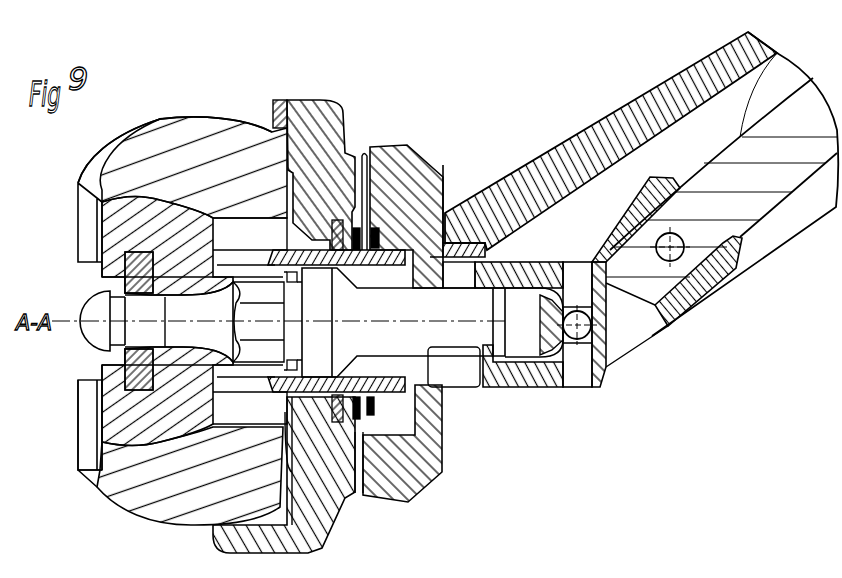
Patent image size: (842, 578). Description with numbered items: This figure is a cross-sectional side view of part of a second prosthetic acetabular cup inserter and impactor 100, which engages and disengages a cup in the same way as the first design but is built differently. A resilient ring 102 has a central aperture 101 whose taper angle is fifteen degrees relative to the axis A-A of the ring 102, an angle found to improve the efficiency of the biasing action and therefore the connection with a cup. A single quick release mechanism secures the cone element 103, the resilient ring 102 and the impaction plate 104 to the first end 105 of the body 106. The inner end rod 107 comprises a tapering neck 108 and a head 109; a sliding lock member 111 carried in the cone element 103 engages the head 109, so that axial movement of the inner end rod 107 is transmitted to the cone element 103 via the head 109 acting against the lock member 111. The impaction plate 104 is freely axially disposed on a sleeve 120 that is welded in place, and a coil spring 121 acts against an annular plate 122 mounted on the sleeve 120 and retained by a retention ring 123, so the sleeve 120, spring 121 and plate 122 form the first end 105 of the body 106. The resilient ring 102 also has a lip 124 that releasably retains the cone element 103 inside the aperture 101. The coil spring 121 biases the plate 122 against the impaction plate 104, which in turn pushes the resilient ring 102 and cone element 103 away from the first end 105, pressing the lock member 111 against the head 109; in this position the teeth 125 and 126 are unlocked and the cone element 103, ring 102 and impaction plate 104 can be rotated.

The inserter and impactor 100 is at (176, 74).
The central aperture 101 is at (157, 196).
The resilient ring 102 is at (88, 166).
The cone element 103 is at (190, 296).
The impaction plate 104 is at (326, 113).
The first end 105 is at (462, 206).
The body 106 is at (530, 178).
The inner end rod 107 is at (487, 346).
The tapering neck 108 is at (100, 233).
The head 109 is at (87, 297).
The lock member 111 is at (102, 368).
The sleeve 120 is at (403, 244).
The coil spring 121 is at (364, 212).
The annular plate 122 is at (325, 246).
The retention ring 123 is at (283, 208).
The lip 124 is at (87, 425).
The teeth 125 is at (347, 440).
The teeth 126 is at (370, 438).